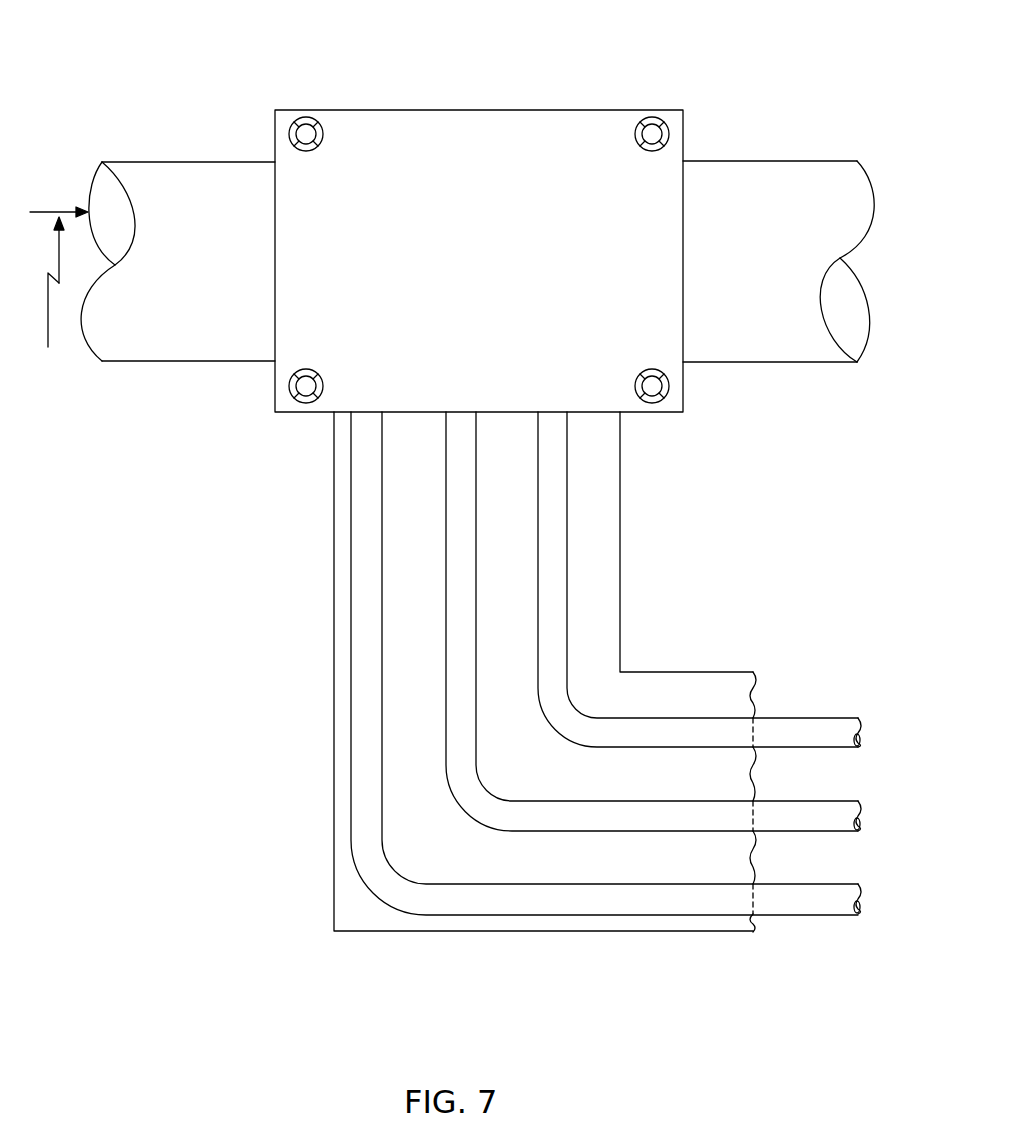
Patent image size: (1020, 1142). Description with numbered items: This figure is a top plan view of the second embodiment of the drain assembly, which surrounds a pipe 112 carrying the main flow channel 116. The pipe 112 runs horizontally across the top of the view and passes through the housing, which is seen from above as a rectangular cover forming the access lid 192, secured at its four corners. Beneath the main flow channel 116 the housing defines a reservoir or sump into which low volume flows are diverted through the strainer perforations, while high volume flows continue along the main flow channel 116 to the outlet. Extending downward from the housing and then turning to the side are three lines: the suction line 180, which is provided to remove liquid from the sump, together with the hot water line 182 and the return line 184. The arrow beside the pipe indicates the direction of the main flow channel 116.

The pipe 112 is at (123, 162).
The main flow channel 116 is at (59, 291).
The access lid 192 is at (306, 117).
The suction line 180 is at (807, 897).
The hot water line 182 is at (807, 813).
The return line 184 is at (807, 732).